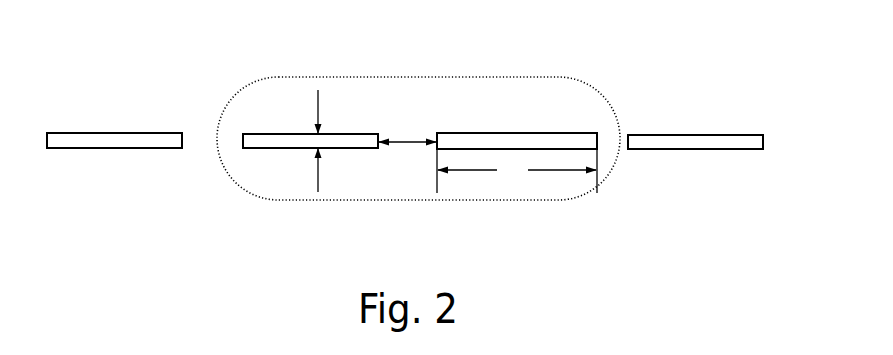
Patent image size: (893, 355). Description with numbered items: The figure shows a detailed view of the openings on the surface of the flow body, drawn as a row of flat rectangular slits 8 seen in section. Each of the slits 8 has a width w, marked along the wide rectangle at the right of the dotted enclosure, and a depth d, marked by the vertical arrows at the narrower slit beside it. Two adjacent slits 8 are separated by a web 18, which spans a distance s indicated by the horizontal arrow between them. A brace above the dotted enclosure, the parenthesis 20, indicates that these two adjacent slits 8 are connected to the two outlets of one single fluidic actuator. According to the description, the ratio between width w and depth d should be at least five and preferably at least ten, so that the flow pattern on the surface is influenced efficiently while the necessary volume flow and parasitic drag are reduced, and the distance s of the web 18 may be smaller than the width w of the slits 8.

The slit 8 is at (250, 141).
The web 18 is at (408, 152).
The parenthesis 20 is at (602, 55).